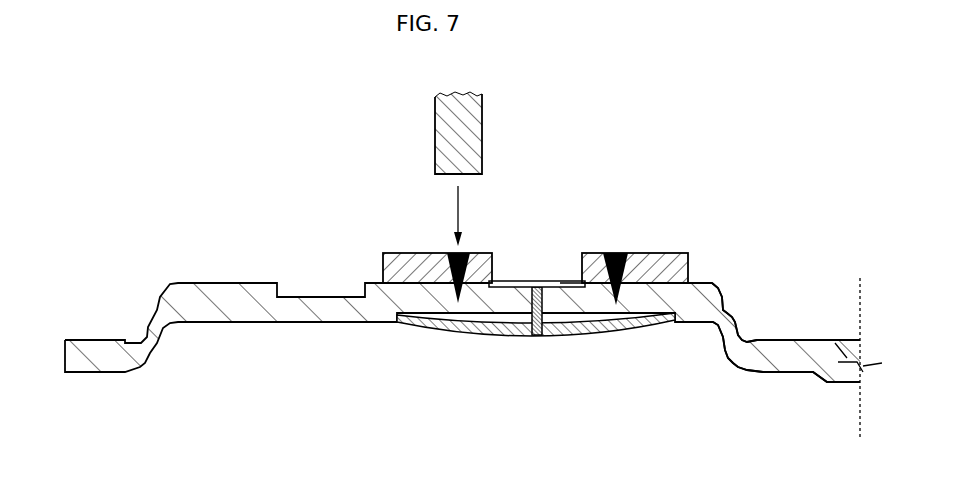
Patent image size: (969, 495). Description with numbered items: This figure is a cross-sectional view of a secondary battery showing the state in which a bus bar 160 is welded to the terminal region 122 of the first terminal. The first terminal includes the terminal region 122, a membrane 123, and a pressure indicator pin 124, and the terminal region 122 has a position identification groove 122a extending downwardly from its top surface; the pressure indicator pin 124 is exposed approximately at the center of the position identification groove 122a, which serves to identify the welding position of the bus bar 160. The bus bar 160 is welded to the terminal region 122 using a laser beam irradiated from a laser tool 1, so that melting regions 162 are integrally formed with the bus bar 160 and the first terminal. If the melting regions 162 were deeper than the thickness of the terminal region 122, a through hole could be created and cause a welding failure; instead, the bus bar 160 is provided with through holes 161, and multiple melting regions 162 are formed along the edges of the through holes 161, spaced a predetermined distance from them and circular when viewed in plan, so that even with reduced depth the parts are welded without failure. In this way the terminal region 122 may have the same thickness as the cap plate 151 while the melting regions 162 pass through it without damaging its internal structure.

The laser tool 1 is at (433, 124).
The terminal region 122 is at (253, 292).
The position identification groove 122a is at (522, 282).
The membrane 123 is at (609, 330).
The pressure indicator pin 124 is at (528, 310).
The cap plate 151 is at (777, 338).
The bus bar 160 is at (660, 253).
The through holes 161 is at (582, 278).
The melting regions 162 is at (614, 252).